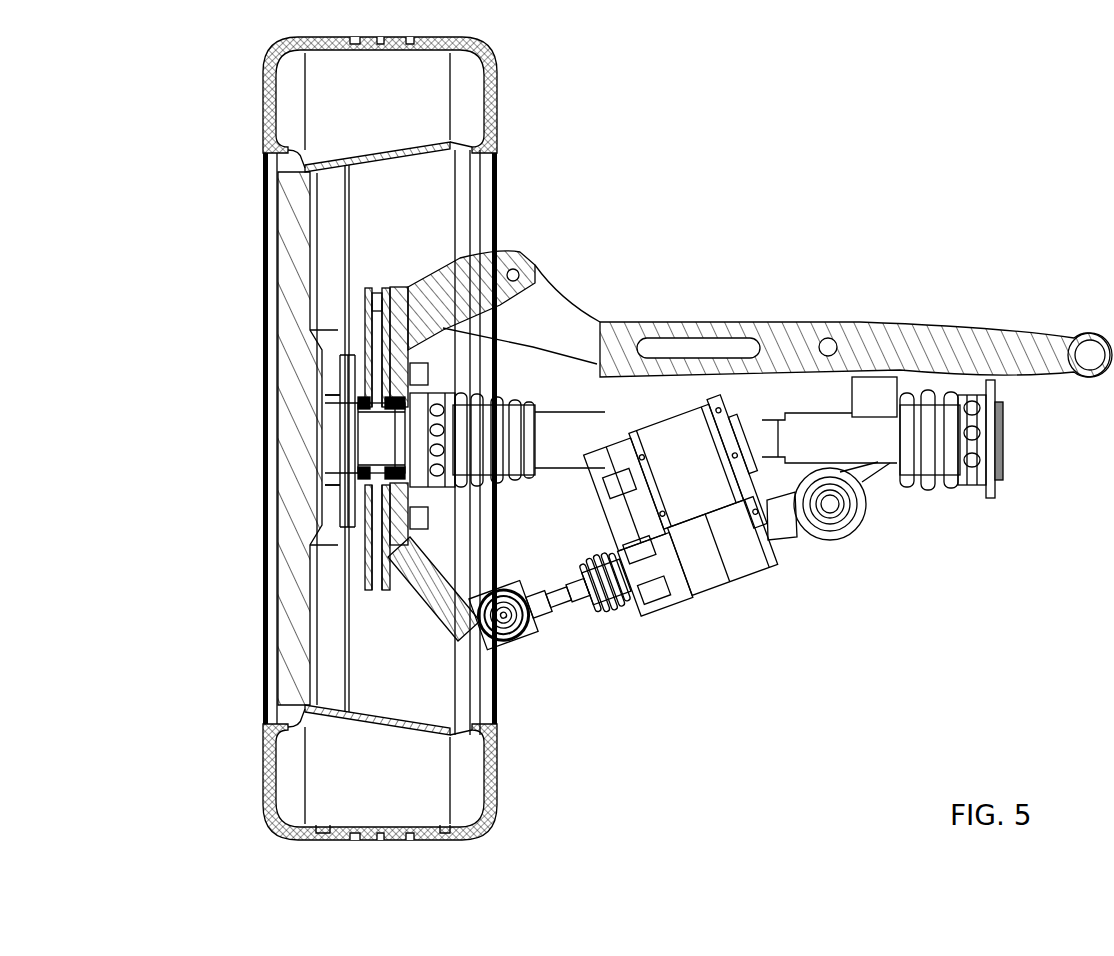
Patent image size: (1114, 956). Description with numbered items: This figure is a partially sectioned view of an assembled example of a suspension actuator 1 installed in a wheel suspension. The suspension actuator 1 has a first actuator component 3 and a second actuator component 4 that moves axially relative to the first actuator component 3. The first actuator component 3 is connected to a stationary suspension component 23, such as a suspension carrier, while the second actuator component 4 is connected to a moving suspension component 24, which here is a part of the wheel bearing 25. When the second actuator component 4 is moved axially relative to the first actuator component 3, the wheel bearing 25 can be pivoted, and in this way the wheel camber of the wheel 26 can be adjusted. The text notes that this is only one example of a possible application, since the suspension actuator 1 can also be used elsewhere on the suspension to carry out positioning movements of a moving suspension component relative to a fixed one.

The suspension actuator 1 is at (758, 623).
The first actuator component 3 is at (835, 540).
The second actuator component 4 is at (578, 608).
The stationary suspension component 23 is at (885, 385).
The moving suspension component 24 is at (442, 610).
The wheel bearing 25 is at (430, 545).
The wheel 26 is at (257, 350).